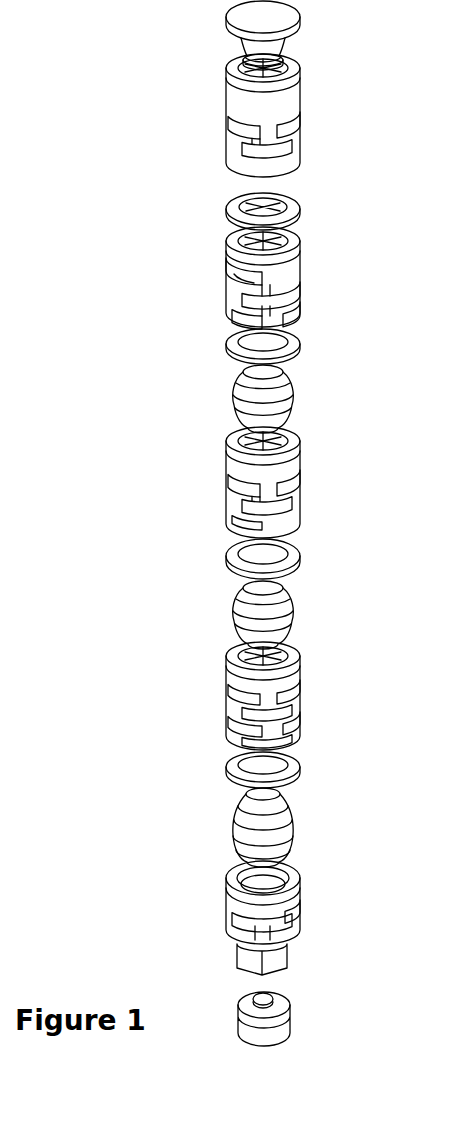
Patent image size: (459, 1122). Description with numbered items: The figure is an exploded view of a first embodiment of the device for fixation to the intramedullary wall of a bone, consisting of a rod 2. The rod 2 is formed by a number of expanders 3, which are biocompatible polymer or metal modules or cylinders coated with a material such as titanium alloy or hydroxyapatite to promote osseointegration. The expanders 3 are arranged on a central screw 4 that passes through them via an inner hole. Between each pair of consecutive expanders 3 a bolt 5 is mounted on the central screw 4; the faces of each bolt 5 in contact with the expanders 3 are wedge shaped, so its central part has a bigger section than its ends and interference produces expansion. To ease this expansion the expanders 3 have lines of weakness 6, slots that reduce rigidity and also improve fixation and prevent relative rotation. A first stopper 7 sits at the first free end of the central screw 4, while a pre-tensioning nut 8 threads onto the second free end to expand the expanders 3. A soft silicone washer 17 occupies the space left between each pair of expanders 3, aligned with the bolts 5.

The rod 2 is at (152, 392).
The expander 3 is at (290, 139).
The central screw 4 is at (292, 213).
The bolt 5 is at (290, 390).
The line of weakness 6 is at (232, 291).
The first stopper 7 is at (256, 25).
The pre-tensioning nut 8 is at (288, 1002).
The soft silicone washer 17 is at (297, 348).